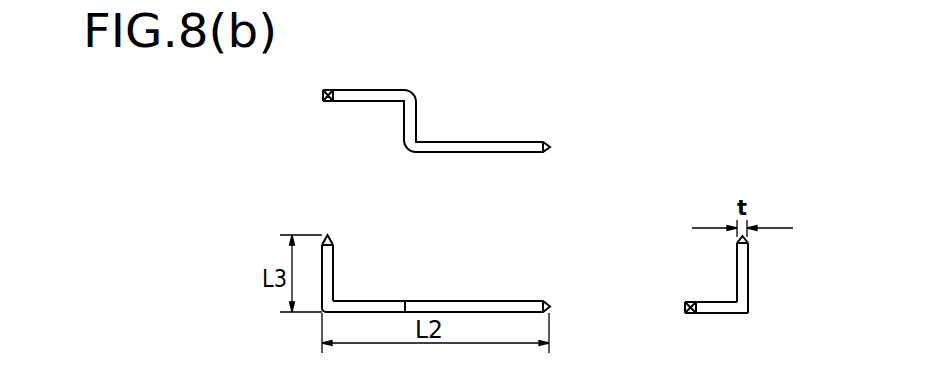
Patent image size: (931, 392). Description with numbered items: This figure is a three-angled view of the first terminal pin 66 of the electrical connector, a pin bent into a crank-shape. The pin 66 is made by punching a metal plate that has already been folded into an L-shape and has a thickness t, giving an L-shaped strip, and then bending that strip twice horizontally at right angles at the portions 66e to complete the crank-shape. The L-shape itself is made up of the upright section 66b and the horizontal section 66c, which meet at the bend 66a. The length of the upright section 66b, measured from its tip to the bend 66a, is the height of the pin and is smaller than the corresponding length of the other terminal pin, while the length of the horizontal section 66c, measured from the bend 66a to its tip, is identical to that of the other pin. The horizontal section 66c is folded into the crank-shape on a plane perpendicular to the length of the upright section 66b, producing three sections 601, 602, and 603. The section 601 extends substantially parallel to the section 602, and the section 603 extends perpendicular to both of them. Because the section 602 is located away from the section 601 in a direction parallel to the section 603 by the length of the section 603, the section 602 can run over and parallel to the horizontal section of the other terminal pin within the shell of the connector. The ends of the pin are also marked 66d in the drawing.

The first terminal pin 66 is at (697, 158).
The bend 66a is at (335, 299).
The upright section 66b is at (332, 238).
The horizontal section 66c is at (546, 302).
The end portion of terminal 66d is at (513, 142).
The portions 66e is at (418, 141).
The section 601 is at (367, 90).
The section 602 is at (460, 153).
The section 603 is at (416, 108).